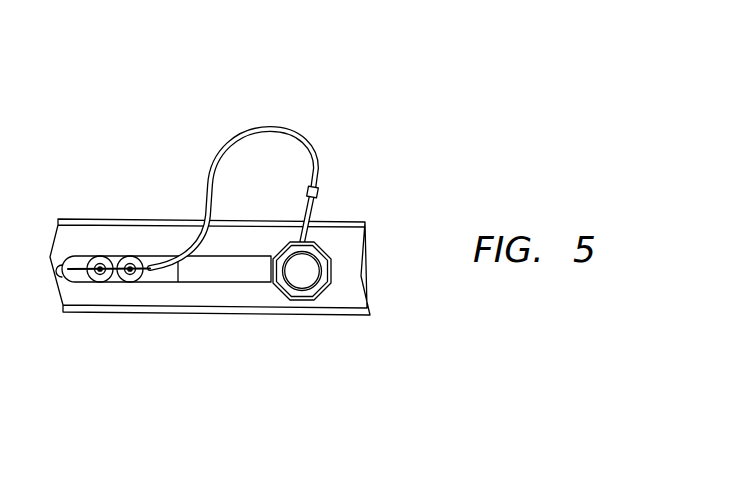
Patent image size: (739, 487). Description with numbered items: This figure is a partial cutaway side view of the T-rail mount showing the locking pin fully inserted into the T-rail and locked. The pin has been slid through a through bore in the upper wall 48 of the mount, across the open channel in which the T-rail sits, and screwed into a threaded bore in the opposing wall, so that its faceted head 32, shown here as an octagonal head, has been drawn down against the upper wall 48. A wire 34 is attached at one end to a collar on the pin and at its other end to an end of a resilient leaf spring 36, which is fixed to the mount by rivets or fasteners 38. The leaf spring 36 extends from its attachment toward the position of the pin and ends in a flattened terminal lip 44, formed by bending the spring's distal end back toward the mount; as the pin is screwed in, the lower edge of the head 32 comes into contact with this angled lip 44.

The head 32 is at (360, 275).
The wire 34 is at (302, 133).
The leaf spring 36 is at (210, 270).
The fasteners 38 is at (129, 276).
The terminal lip 44 is at (275, 255).
The upper wall 48 is at (348, 238).